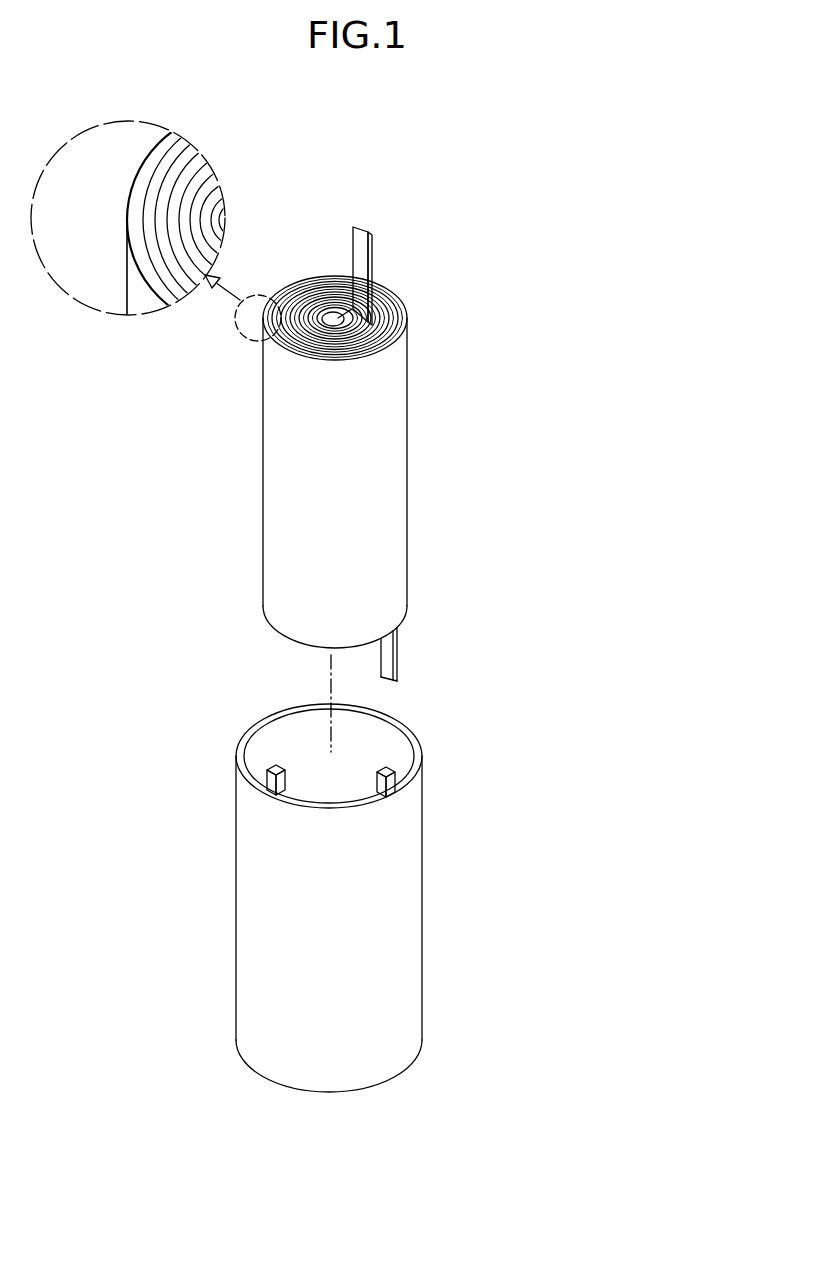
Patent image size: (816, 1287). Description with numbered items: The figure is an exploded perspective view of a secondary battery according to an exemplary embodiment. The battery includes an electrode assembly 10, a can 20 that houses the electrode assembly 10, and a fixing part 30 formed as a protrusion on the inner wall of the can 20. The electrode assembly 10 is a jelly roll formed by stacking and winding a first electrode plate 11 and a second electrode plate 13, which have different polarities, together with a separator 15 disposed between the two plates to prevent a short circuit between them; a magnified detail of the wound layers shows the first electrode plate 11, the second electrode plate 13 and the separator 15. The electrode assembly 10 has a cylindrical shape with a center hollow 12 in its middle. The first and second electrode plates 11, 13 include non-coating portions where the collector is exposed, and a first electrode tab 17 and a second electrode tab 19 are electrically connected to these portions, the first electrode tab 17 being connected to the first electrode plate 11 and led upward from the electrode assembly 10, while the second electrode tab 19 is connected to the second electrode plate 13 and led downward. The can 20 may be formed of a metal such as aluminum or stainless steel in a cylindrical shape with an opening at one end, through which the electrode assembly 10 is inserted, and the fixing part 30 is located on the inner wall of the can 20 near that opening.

The electrode assembly 10 is at (407, 470).
The first electrode plate 11 is at (138, 242).
The center hollow 12 is at (372, 312).
The second electrode plate 13 is at (180, 275).
The separator 15 is at (160, 262).
The first electrode tab 17 is at (372, 243).
The second electrode tab 19 is at (397, 628).
The can 20 is at (415, 925).
The fixing part 30 is at (395, 772).